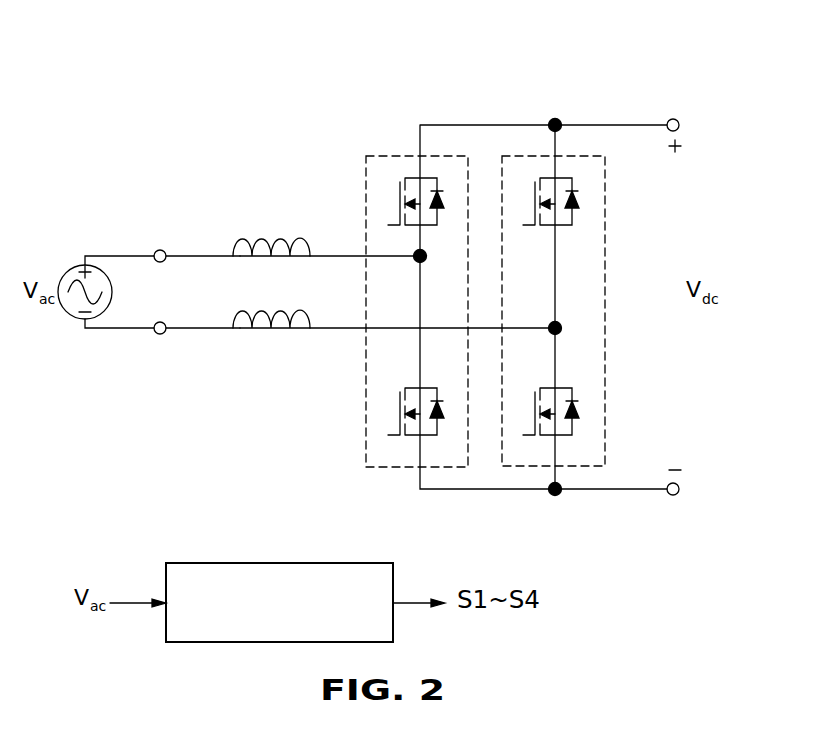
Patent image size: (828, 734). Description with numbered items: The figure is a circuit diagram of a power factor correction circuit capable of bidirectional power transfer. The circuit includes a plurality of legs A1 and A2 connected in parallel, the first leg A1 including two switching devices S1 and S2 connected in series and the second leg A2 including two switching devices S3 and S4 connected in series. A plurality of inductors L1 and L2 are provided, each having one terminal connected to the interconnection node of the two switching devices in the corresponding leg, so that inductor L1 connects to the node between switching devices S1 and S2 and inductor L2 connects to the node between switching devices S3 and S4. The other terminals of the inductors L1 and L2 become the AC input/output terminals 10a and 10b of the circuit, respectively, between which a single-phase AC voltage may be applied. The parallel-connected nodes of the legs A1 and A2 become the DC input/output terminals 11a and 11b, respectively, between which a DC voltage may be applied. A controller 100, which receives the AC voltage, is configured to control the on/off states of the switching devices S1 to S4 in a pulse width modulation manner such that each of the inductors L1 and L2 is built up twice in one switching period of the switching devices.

The AC input/output terminal 10a is at (160, 250).
The AC input/output terminal 10b is at (160, 334).
The DC input/output terminal 11a is at (673, 119).
The DC input/output terminal 11b is at (673, 495).
The leg A1 is at (425, 262).
The leg A2 is at (560, 262).
The controller 100 is at (222, 563).
The inductor L1 is at (223, 236).
The inductor L2 is at (223, 346).
The switching device S1 is at (425, 217).
The switching device S2 is at (425, 427).
The switching device S3 is at (561, 217).
The switching device S4 is at (561, 427).